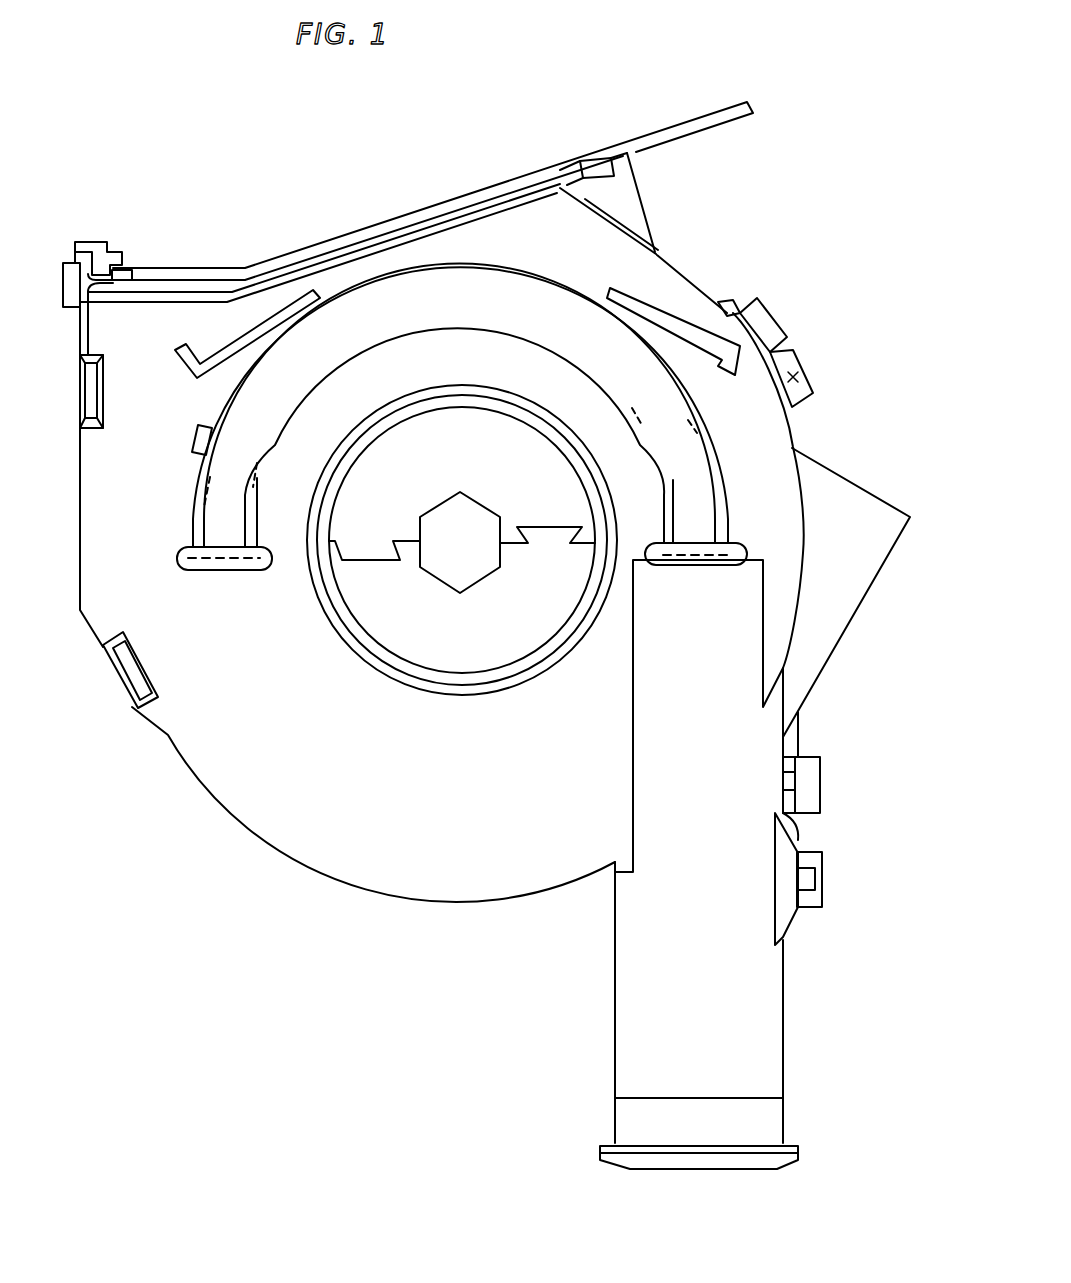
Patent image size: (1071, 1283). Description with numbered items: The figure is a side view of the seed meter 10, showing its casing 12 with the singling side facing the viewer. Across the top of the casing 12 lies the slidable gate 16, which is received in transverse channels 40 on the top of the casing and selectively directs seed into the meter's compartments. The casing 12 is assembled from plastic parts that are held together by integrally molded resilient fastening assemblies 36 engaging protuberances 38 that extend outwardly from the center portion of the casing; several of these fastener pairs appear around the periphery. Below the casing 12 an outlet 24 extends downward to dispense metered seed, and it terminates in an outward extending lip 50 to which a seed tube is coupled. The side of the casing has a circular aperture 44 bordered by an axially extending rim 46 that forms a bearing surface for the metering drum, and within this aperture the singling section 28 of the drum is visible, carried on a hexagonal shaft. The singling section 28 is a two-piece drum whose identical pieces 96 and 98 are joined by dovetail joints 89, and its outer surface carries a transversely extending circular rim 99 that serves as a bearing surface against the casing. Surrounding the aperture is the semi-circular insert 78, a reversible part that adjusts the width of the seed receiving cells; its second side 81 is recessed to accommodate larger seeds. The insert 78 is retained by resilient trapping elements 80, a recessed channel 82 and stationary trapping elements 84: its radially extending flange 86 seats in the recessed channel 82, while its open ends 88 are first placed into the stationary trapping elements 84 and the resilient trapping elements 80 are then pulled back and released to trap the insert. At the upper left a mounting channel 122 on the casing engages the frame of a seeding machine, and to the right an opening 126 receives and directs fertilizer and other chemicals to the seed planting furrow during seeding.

The seed meter 10 is at (766, 180).
The casing 12 is at (234, 820).
The slidable gate 16 is at (345, 234).
The outlet 24 is at (770, 1058).
The singling section 28 is at (405, 470).
The resilient fastening assemblies 36 is at (770, 308).
The protuberances 38 is at (80, 400).
The transverse channels 40 is at (125, 285).
The circular apertures 44 is at (365, 630).
The axially extending rim 46 is at (383, 678).
The outward extending lip 50 is at (800, 1152).
The semi-circular insert 78 is at (203, 510).
The resilient trapping elements 80 is at (236, 341).
The second side 81 is at (460, 405).
The recessed channel 82 is at (216, 405).
The stationary trapping elements 84 is at (270, 572).
The radially extending flange 86 is at (207, 430).
The open ends 88 is at (222, 565).
The dovetail joints 89 is at (544, 524).
The piece 96 is at (373, 486).
The piece 98 is at (497, 621).
The circular rim 99 is at (443, 690).
The mounting channel 122 is at (80, 256).
The opening 126 is at (853, 470).